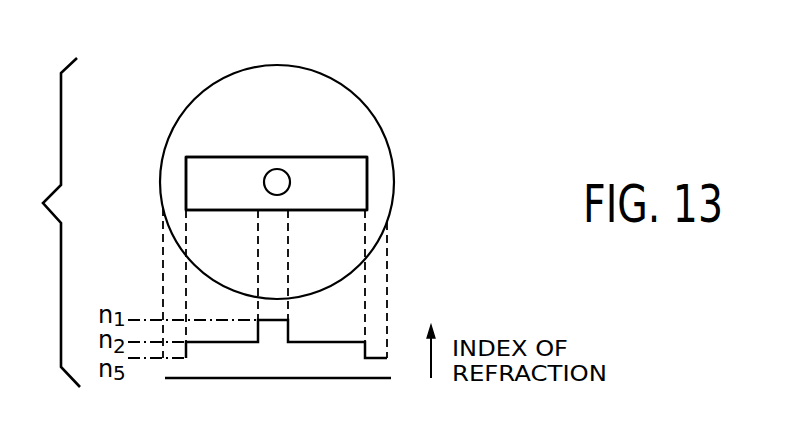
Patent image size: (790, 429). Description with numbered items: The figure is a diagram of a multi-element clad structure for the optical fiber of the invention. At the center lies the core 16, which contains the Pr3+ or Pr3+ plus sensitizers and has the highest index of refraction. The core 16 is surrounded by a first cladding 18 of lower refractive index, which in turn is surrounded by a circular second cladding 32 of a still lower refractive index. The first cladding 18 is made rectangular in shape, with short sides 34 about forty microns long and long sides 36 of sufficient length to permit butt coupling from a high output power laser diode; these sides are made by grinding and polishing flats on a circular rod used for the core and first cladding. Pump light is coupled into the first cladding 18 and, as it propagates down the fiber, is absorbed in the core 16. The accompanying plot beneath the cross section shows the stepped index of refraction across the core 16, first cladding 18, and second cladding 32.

The core 16 is at (281, 181).
The first cladding 18 is at (337, 170).
The second cladding 32 is at (345, 240).
The short sides 34 is at (186, 176).
The long sides 36 is at (220, 157).